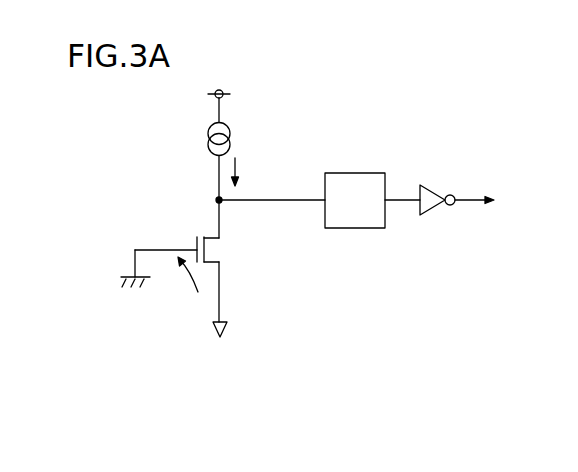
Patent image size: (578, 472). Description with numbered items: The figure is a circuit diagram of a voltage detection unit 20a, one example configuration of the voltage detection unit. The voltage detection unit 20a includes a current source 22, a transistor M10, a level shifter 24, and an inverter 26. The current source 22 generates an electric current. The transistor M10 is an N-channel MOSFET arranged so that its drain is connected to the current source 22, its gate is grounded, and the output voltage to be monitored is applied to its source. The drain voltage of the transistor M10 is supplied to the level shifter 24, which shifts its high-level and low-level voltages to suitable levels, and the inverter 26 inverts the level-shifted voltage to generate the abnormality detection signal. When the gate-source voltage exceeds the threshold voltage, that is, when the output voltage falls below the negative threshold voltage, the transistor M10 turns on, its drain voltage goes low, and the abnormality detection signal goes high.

The voltage detection unit 20a is at (368, 404).
The current source 22 is at (208, 140).
The level shifter 24 is at (362, 228).
The inverter 26 is at (431, 213).
The transistor M10 is at (228, 250).